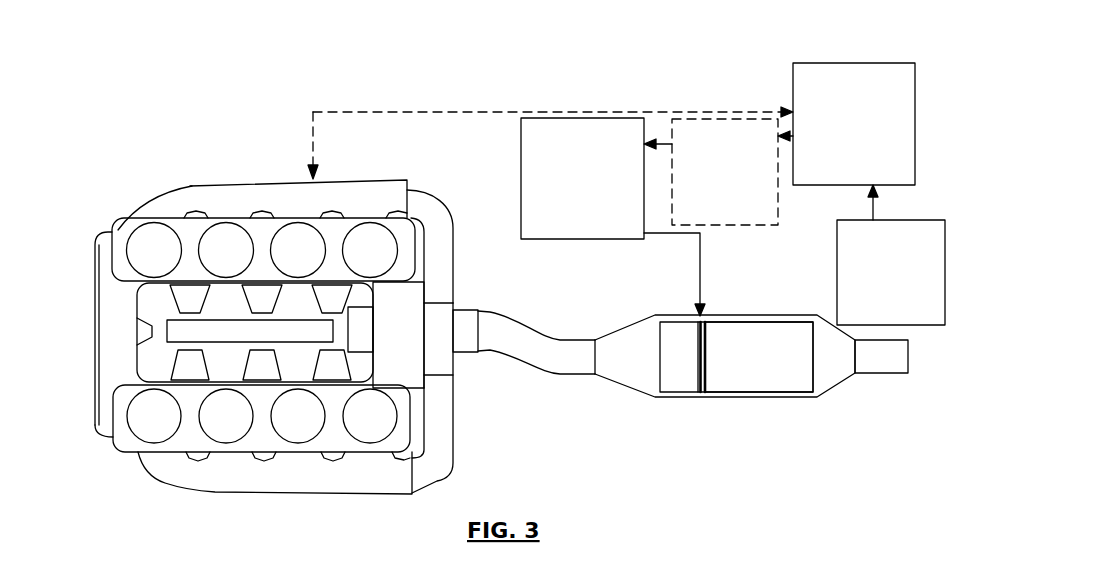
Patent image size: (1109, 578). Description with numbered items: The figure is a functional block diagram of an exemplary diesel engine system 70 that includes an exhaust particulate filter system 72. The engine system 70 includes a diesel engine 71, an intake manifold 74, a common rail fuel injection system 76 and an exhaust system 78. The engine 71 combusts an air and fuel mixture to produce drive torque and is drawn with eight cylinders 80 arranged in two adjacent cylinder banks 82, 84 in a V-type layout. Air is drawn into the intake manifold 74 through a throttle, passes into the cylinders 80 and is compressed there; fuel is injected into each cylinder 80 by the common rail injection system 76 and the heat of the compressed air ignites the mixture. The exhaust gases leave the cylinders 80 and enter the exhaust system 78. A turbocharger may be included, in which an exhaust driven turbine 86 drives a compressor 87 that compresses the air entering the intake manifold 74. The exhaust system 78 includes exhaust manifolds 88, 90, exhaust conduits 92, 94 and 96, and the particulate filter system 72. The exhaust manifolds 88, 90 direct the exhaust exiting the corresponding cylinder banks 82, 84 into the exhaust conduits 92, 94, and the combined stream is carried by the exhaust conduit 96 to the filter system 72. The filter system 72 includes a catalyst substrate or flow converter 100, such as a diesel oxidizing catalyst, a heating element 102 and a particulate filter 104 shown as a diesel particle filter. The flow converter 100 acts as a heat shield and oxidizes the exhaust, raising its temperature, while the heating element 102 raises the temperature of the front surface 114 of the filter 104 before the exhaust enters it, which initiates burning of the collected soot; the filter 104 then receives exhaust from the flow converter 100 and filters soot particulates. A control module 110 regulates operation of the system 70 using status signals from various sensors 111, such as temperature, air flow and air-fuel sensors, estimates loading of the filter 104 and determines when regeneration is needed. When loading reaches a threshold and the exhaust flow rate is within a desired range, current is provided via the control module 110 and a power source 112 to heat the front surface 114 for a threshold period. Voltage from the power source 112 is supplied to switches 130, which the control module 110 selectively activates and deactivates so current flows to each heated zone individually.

The diesel engine system 70 is at (590, 90).
The diesel engine 71 is at (160, 480).
The exhaust PF system 72 is at (803, 398).
The intake manifold 74 is at (137, 353).
The common rail fuel injection system 76 is at (167, 321).
The exhaust system 78 is at (589, 426).
The cylinders 80 is at (138, 232).
The first cylinder bank 82 is at (112, 237).
The second cylinder bank 84 is at (113, 420).
The exhaust driven turbine 86 is at (455, 307).
The compressor 87 is at (425, 297).
The exhaust manifold 88 is at (237, 182).
The exhaust manifold 90 is at (293, 495).
The exhaust conduit 92 is at (447, 208).
The exhaust conduit 94 is at (453, 437).
The exhaust conduit 96 is at (558, 337).
The catalyst substrate/flow converter 100 is at (678, 322).
The heating element 102 is at (703, 322).
The particulate filter 104 is at (762, 322).
The control module 110 is at (871, 72).
The sensors 111 is at (933, 218).
The power source 112 is at (521, 134).
The front surface 114 is at (700, 393).
The switches 130 is at (778, 208).